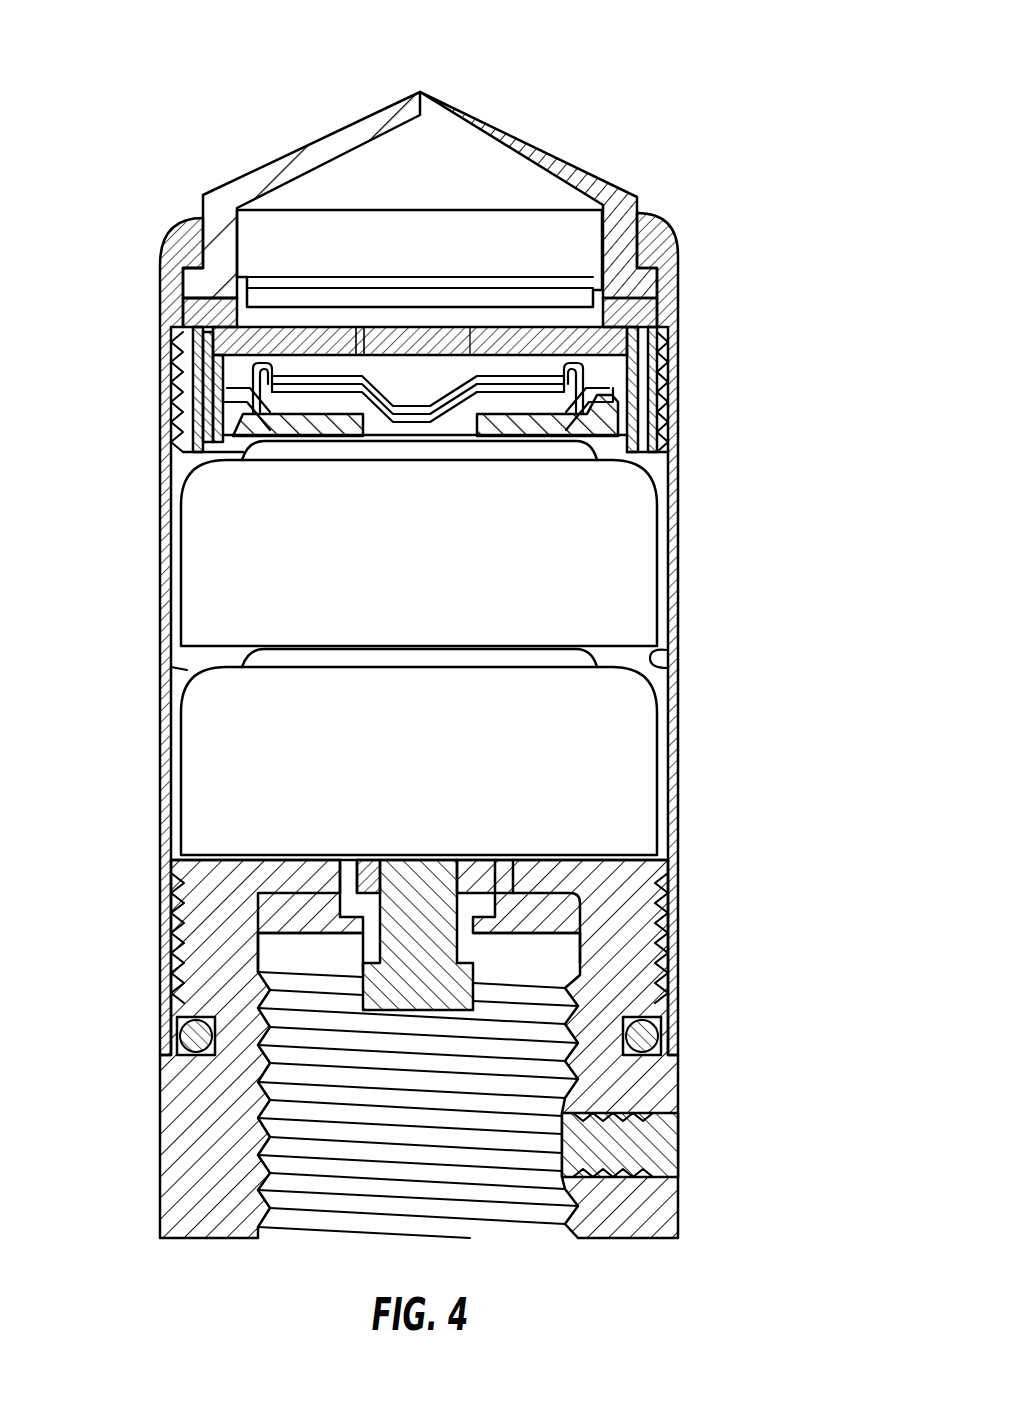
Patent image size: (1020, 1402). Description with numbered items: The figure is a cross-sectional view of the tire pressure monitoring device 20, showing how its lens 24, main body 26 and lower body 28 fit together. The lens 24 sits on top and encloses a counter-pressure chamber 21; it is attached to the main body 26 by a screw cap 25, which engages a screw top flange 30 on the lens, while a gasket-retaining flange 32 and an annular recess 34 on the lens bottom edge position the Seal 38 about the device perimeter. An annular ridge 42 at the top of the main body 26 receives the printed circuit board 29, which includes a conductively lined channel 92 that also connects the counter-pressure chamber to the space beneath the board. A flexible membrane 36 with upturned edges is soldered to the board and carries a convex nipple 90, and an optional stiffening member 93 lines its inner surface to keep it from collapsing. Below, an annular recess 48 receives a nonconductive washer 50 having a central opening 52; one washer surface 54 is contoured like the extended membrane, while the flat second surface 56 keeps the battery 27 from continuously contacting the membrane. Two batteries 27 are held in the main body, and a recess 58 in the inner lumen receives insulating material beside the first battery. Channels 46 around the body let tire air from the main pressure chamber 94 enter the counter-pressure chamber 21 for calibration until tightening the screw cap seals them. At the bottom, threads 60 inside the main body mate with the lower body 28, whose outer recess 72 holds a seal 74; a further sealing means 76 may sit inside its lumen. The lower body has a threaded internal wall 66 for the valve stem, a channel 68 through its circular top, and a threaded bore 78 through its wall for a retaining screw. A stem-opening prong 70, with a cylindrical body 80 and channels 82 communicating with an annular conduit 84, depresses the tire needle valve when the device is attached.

The tire pressure monitoring device 20 is at (603, 55).
The counter-pressure chamber 21 is at (383, 158).
The lens 24 is at (550, 166).
The screw cap 25 is at (668, 238).
The main body 26 is at (672, 546).
The battery 27 is at (638, 600).
The lower body 28 is at (190, 1177).
The printed circuit board 29 is at (487, 340).
The screw top flange 30 is at (190, 258).
The gasket-retaining flange 32 is at (250, 275).
The annular recess 34 is at (192, 292).
The flexible membrane 36 is at (195, 432).
The seal 38 is at (190, 326).
The annular ridge 42 is at (650, 345).
The channel 46 is at (200, 365).
The annular recess 48 is at (195, 450).
The nonconductive washer 50 is at (658, 415).
The opening 52 is at (400, 432).
The washer surface 54 is at (630, 372).
The second surface 56 is at (612, 450).
The recess 58 is at (660, 655).
The threads 60 is at (660, 930).
The threaded internal wall 66 is at (522, 1195).
The channel 68 is at (345, 875).
The stem-opening prong 70 is at (290, 965).
The recess 72 is at (655, 1040).
The seal 74 is at (188, 1040).
The sealing means 76 is at (262, 945).
The threaded bore 78 is at (660, 1150).
The cylindrical body 80 is at (415, 875).
The channel 82 is at (470, 945).
The annular conduit 84 is at (474, 895).
The convex nipple 90 is at (232, 400).
The channel 92 is at (360, 360).
The stiffening member 93 is at (430, 395).
The main pressure chamber 94 is at (187, 668).